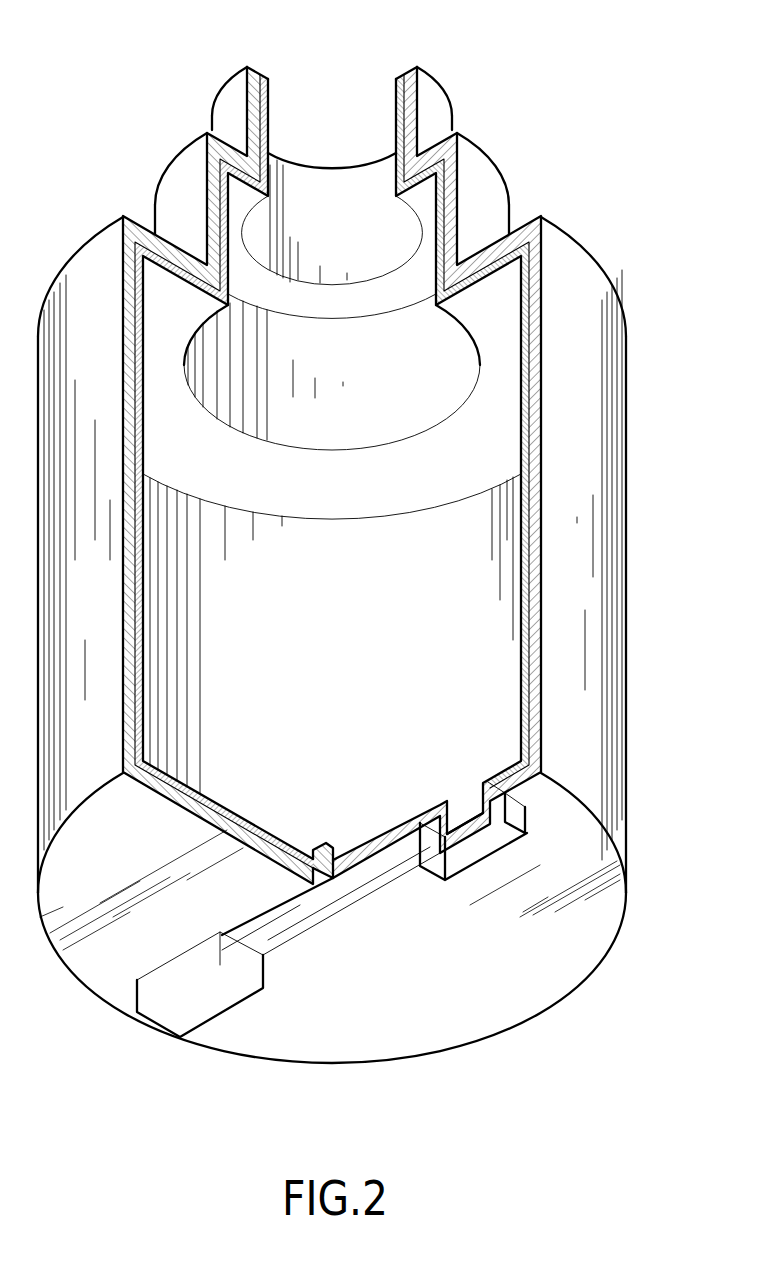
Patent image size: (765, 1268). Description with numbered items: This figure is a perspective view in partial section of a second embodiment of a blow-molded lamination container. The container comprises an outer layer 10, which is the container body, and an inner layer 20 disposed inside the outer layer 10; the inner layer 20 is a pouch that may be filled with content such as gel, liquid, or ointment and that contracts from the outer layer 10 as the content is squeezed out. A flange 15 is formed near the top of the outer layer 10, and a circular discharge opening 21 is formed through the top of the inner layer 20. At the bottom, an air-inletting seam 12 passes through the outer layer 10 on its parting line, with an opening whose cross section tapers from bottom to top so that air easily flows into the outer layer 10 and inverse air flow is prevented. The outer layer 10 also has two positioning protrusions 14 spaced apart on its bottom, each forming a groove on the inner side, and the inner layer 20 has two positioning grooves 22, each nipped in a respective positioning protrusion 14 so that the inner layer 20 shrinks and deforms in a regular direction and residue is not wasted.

The outer layer 10 is at (632, 477).
The air-inletting seam 12 is at (315, 893).
The positioning protrusion 14 is at (457, 826).
The flange 15 is at (493, 160).
The inner layer 20 is at (506, 627).
The circular discharge opening 21 is at (397, 100).
The positioning groove 22 is at (483, 817).